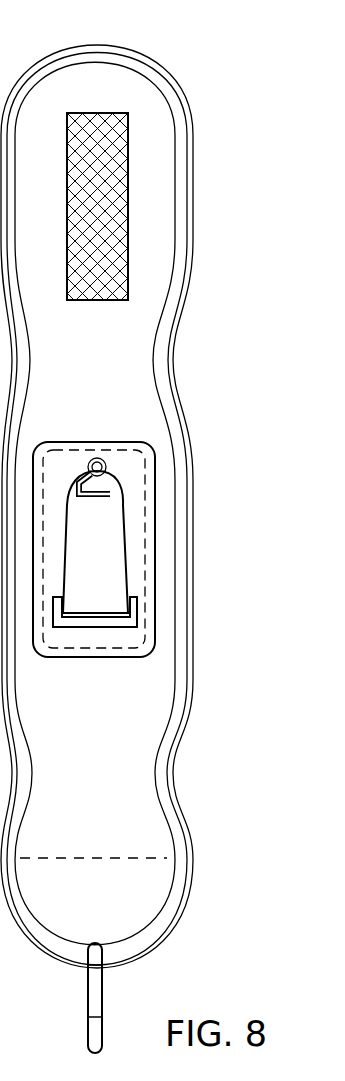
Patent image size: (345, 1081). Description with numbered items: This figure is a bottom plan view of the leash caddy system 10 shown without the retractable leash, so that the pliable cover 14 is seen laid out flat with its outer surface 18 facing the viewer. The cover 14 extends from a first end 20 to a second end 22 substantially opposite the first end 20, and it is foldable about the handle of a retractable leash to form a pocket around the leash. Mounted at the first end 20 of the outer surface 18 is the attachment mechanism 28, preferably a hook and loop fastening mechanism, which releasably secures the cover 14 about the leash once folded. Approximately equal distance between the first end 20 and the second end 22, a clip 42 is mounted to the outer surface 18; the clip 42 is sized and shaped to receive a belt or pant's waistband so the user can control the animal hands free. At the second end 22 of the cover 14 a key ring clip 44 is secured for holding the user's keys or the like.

The leash caddy system 10 is at (145, 533).
The cover 14 is at (197, 653).
The outer surface 18 is at (110, 720).
The first end 20 is at (115, 45).
The second end 22 is at (40, 957).
The attachment mechanism 28 is at (117, 244).
The clip 42 is at (104, 547).
The key ring clip 44 is at (98, 997).